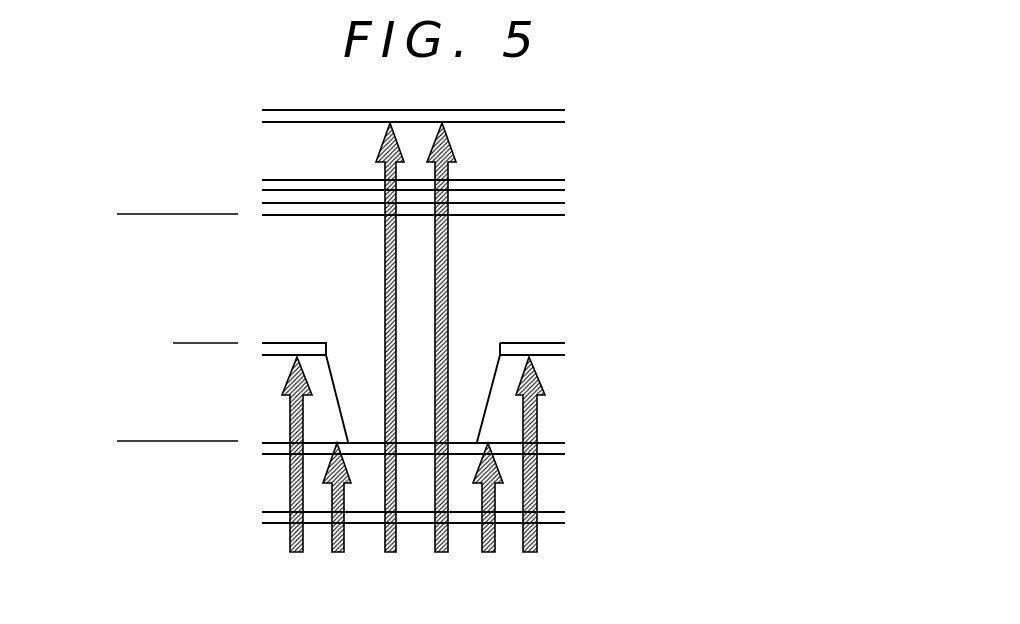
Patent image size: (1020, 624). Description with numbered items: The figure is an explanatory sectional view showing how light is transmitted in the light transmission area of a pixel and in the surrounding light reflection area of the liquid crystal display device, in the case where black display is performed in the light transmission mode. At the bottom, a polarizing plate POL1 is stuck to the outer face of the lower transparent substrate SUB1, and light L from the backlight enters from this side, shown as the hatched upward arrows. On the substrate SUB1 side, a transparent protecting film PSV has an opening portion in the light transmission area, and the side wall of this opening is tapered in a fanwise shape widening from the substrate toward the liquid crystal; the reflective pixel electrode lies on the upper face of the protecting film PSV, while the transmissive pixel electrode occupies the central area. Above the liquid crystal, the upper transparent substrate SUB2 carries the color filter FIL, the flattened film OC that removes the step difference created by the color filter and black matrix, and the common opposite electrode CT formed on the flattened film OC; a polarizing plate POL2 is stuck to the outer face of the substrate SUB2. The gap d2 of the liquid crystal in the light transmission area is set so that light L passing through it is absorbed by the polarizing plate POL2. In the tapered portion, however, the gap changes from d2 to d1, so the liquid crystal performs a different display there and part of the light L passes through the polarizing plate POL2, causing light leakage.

The polarizing plate POL2 is at (560, 118).
The transparent substrate SUB2 is at (550, 152).
The color filter FIL is at (560, 186).
The flattened film OC is at (560, 197).
The common opposite electrode CT is at (560, 212).
The protecting film PSV is at (562, 378).
The transparent substrate SUB1 is at (558, 488).
The polarizing plate POL1 is at (560, 518).
The light L is at (450, 535).
The gap d1 is at (209, 214).
The gap d2 is at (133, 214).